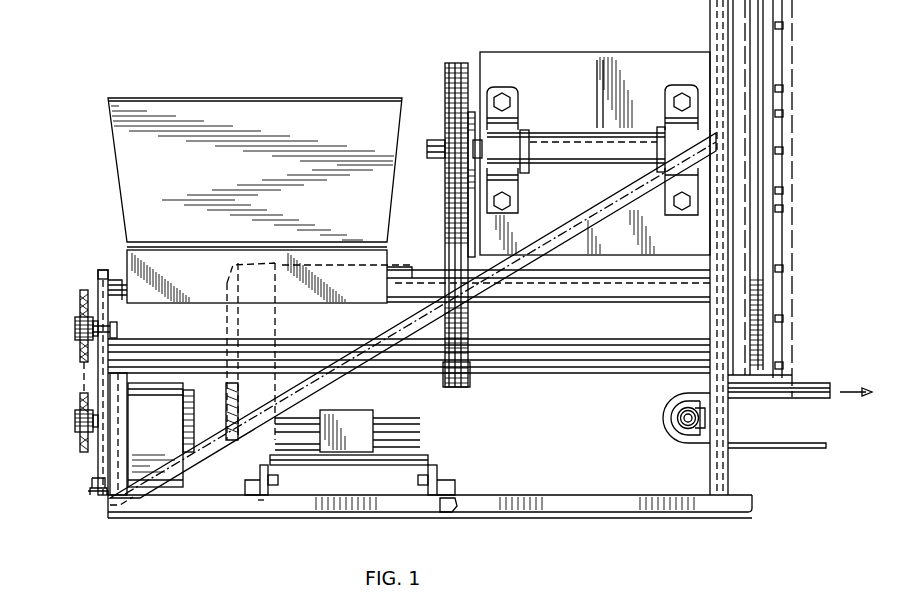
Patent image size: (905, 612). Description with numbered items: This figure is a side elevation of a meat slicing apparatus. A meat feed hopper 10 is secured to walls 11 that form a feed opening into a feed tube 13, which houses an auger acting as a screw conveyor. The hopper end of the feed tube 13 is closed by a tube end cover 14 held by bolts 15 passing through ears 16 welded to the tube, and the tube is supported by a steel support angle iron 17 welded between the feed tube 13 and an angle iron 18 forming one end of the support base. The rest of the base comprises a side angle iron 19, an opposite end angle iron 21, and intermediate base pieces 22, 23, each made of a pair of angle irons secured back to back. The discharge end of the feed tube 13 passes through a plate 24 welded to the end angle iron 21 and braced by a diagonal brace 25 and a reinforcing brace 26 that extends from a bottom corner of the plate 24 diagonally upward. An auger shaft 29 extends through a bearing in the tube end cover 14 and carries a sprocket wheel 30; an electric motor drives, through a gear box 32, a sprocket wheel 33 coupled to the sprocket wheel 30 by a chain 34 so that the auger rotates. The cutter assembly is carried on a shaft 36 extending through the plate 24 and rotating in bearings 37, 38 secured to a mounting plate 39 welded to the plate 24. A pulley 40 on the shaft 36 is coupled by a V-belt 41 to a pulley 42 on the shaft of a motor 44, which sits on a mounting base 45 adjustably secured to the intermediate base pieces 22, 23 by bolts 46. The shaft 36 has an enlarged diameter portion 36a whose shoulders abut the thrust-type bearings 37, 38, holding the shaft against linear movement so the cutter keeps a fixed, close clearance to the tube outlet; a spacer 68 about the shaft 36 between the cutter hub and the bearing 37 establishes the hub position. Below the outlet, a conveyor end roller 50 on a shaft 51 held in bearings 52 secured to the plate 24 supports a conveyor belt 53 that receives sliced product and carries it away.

The meat feed hopper 10 is at (112, 150).
The walls 11 is at (127, 262).
The feed tube 13 is at (568, 362).
The tube end cover 14 is at (98, 274).
The bolts 15 is at (80, 335).
The ears 16 is at (117, 328).
The steel support angle iron 17 is at (100, 462).
The angle iron 18 is at (110, 505).
The side angle iron 19 is at (638, 518).
The opposite end angle iron 21 is at (752, 518).
The intermediate base piece 22 is at (462, 515).
The intermediate base piece 23 is at (260, 501).
The plate 24 is at (730, 483).
The diagonal brace 25 is at (605, 215).
The reinforcing brace 26 is at (700, 381).
The shaft 29 is at (75, 324).
The sprocket wheel 30 is at (80, 300).
The gear box 32 is at (166, 440).
The sprocket wheel 33 is at (80, 440).
The chain 34 is at (84, 378).
The shaft 36 is at (433, 140).
The enlarged diameter portion 36a is at (607, 128).
The bearing 37 is at (665, 130).
The bearing 38 is at (512, 133).
The mounting plate 39 is at (503, 52).
The pulley 40 is at (444, 67).
The V-belt 41 is at (447, 262).
The pulley 42 is at (470, 378).
The motor 44 is at (402, 415).
The mounting base 45 is at (427, 456).
The bolts 46 is at (447, 485).
The conveyor end roller 50 is at (667, 437).
The shaft 51 is at (680, 418).
The bearings 52 is at (693, 433).
The conveyor belt 53 is at (812, 448).
The spacer 68 is at (707, 125).